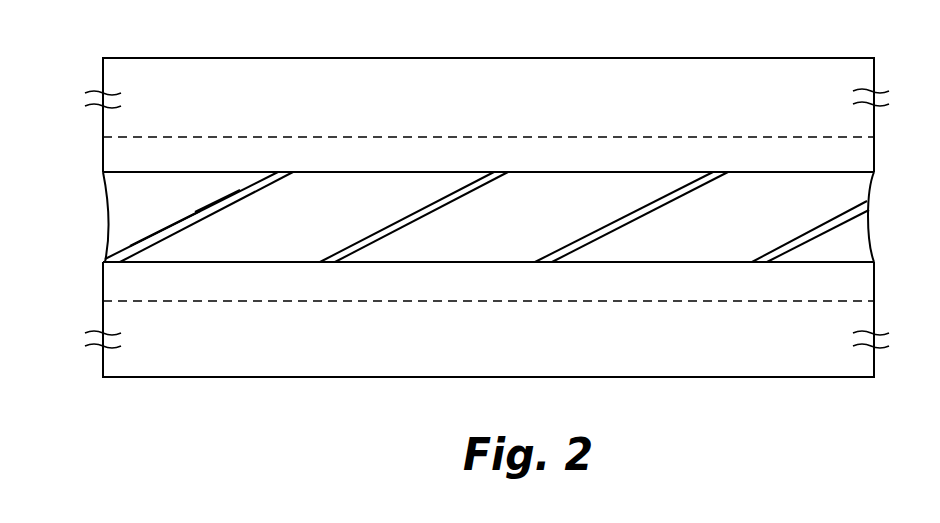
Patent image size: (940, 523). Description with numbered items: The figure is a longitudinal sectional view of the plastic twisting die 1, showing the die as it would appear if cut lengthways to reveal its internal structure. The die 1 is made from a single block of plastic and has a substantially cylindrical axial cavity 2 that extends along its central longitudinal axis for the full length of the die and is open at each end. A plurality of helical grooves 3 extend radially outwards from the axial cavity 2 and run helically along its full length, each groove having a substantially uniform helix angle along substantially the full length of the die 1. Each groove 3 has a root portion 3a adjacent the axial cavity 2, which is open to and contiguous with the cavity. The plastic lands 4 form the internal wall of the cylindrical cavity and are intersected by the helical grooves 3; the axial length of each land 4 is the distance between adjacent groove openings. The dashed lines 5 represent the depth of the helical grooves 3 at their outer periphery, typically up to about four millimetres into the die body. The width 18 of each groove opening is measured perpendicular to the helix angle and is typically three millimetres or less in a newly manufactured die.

The die 1 is at (488, 102).
The axial cavity 2 is at (83, 172).
The helical grooves 3 is at (608, 215).
The root portion 3a is at (178, 227).
The lands 4 is at (500, 240).
The dashed lines 5 is at (880, 137).
The width of the opening 18 is at (200, 177).